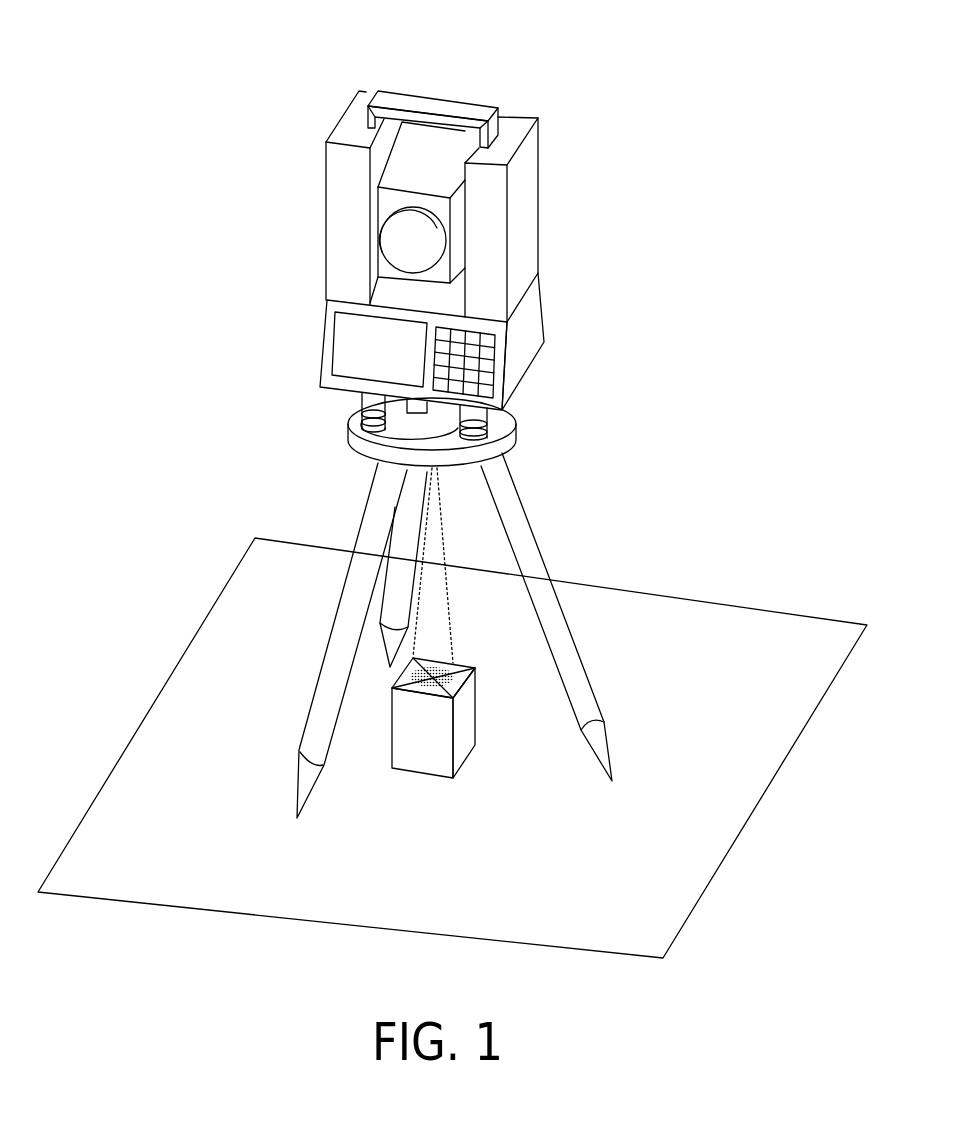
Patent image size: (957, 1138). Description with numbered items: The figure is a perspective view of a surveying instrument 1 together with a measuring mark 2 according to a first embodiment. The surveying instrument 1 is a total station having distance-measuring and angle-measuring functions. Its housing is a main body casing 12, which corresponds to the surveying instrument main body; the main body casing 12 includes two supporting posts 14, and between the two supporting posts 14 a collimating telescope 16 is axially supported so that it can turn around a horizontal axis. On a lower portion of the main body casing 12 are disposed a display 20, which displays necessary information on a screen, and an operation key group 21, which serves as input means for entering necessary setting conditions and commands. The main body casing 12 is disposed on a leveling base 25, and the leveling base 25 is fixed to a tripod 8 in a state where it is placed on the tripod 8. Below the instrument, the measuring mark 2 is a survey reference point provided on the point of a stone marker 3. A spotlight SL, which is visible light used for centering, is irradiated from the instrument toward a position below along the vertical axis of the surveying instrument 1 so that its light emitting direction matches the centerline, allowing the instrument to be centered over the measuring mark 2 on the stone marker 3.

The surveying instrument 1 is at (295, 107).
The main body casing 12 is at (527, 203).
The supporting posts 14 is at (353, 240).
The collimating telescope 16 is at (446, 247).
The display 20 is at (360, 334).
The operation key group 21 is at (490, 365).
The leveling base 25 is at (507, 421).
The tripod 8 is at (555, 545).
The measuring mark 2 is at (460, 663).
The spotlight SL is at (475, 677).
The stone marker 3 is at (462, 743).